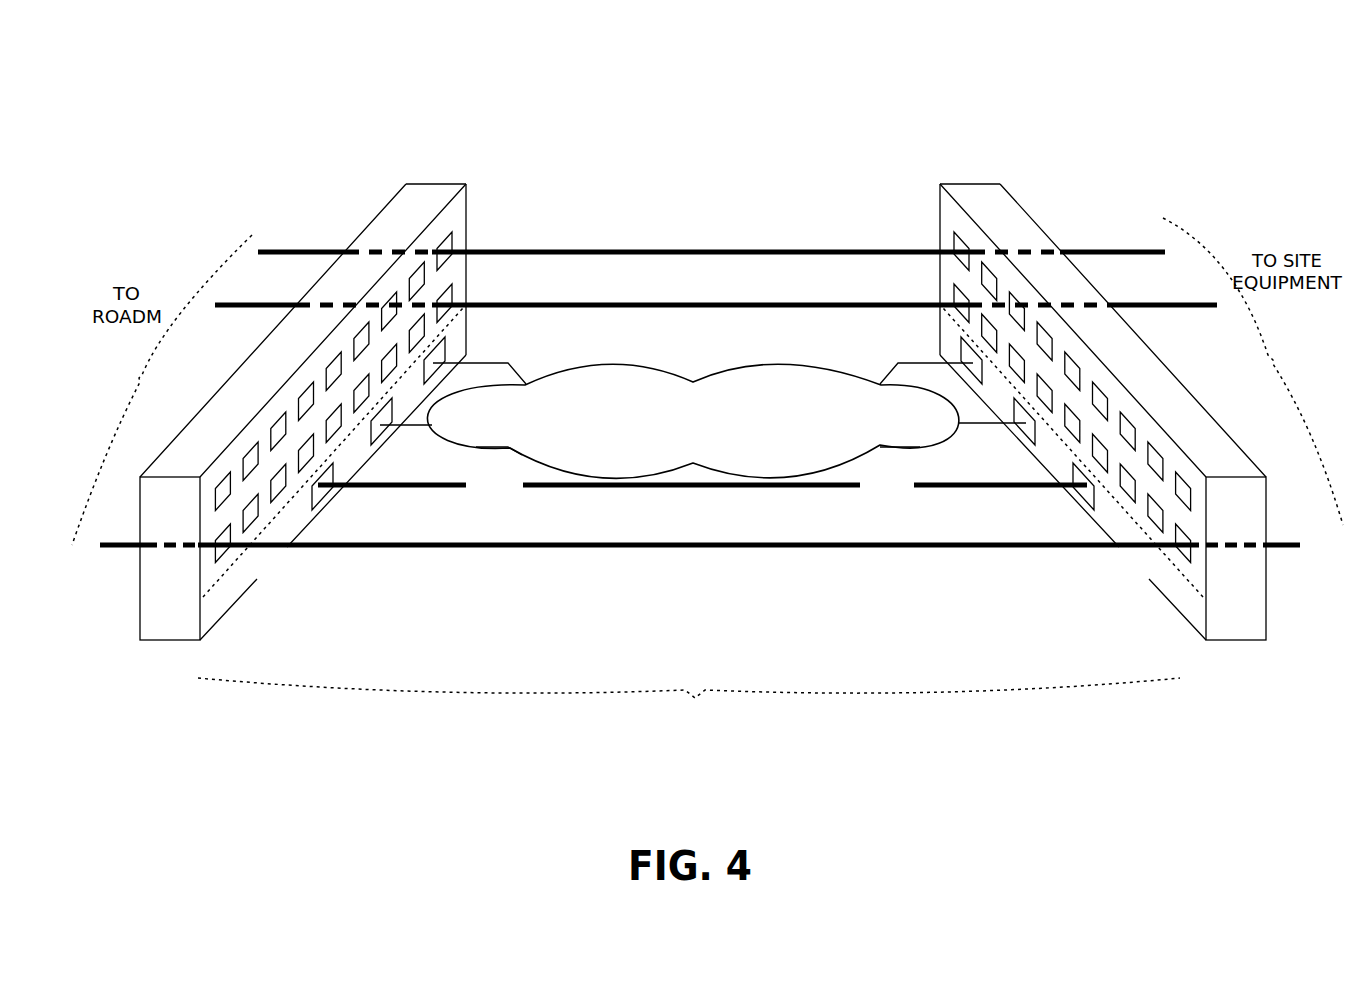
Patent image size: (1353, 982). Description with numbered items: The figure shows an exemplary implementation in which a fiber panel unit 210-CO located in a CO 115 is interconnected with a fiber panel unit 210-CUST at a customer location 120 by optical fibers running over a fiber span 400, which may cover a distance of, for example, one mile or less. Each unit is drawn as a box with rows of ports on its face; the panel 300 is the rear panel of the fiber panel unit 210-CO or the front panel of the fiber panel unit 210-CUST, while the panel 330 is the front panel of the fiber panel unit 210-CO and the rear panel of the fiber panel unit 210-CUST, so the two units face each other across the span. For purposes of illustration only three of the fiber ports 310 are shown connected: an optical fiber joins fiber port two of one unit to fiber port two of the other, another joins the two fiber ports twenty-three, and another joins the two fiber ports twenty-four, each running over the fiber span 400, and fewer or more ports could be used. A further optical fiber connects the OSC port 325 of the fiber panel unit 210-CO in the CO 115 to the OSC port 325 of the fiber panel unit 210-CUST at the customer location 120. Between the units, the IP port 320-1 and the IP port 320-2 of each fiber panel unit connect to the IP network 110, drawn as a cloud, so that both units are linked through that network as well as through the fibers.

The CO 115 is at (440, 120).
The customer location 120 is at (972, 120).
The fiber panel unit 210-CO is at (240, 372).
The fiber panel unit 210-CUST is at (1203, 360).
The panel 300 is at (501, 193).
The panel 330 is at (362, 193).
The fiber port 310 is at (833, 222).
The IP port 320-1 is at (456, 469).
The IP port 320-2 is at (570, 340).
The OSC port 325 is at (448, 514).
The IP network 110 is at (694, 382).
The fiber span 400 is at (689, 721).